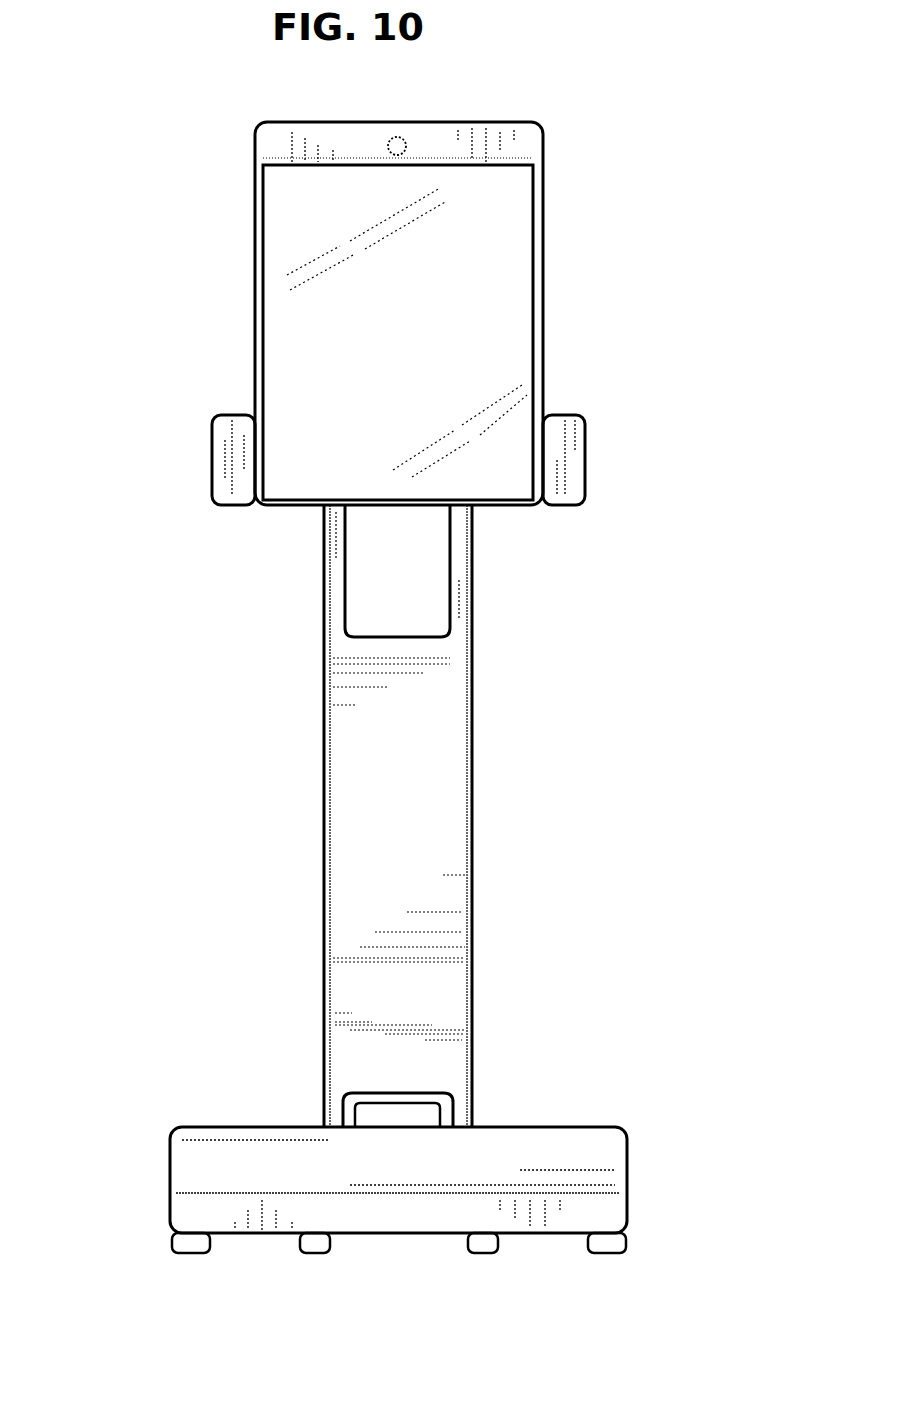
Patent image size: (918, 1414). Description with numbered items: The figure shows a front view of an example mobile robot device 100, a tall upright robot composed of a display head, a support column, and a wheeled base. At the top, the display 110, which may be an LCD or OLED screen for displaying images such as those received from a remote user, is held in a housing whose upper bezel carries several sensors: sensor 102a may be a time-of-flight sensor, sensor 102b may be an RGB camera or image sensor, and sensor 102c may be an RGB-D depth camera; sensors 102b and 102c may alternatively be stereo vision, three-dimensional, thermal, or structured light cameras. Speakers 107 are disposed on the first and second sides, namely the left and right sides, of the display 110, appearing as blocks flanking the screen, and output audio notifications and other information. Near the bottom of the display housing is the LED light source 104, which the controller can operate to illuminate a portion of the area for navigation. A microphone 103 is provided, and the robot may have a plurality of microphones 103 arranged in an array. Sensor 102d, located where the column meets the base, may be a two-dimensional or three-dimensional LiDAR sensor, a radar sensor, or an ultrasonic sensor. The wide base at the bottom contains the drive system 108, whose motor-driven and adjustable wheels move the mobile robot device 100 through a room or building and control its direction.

The mobile robot device 100 is at (746, 49).
The time-of-flight sensor 102a is at (292, 151).
The RGB camera 102b is at (397, 150).
The RGB-D camera 102c is at (517, 150).
The LiDAR sensor 102d is at (398, 1125).
The microphone 103 is at (382, 510).
The LED light source 104 is at (291, 494).
The speaker 107 is at (233, 493).
The drive system 108 is at (625, 1245).
The display 110 is at (500, 315).